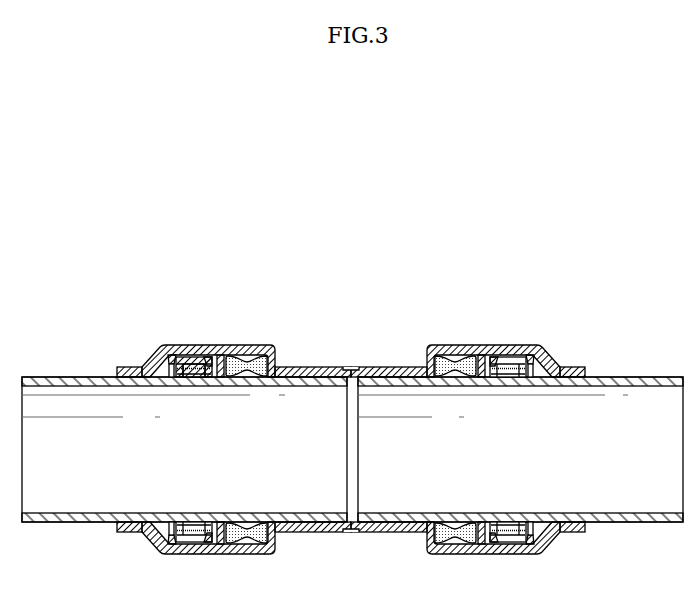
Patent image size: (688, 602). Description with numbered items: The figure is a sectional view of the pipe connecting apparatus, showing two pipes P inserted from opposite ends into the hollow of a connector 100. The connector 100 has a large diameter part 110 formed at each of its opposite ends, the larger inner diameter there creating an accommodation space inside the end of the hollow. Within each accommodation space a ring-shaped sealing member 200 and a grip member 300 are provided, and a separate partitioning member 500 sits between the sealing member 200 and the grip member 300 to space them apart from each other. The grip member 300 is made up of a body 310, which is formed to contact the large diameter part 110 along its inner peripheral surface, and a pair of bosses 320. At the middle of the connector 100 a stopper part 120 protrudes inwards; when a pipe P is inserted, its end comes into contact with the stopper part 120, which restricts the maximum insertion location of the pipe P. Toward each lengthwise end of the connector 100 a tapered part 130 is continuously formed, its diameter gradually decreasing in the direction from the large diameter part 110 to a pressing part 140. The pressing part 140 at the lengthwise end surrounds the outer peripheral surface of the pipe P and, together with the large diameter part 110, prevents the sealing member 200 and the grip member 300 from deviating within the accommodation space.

The pipe P is at (58, 377).
The connector 100 is at (397, 367).
The large diameter part 110 is at (225, 345).
The stopper part 120 is at (352, 367).
The tapered part 130 is at (159, 348).
The pressing part 140 is at (123, 367).
The sealing member 200 is at (277, 365).
The grip member 300 is at (206, 293).
The body 310 is at (195, 345).
The bosses 320 is at (168, 354).
The partitioning member 500 is at (250, 347).